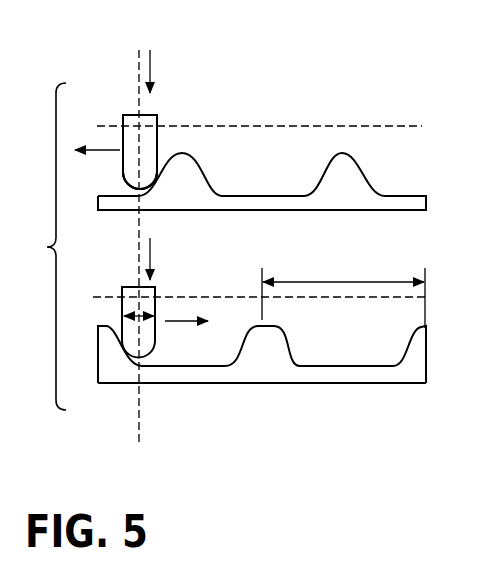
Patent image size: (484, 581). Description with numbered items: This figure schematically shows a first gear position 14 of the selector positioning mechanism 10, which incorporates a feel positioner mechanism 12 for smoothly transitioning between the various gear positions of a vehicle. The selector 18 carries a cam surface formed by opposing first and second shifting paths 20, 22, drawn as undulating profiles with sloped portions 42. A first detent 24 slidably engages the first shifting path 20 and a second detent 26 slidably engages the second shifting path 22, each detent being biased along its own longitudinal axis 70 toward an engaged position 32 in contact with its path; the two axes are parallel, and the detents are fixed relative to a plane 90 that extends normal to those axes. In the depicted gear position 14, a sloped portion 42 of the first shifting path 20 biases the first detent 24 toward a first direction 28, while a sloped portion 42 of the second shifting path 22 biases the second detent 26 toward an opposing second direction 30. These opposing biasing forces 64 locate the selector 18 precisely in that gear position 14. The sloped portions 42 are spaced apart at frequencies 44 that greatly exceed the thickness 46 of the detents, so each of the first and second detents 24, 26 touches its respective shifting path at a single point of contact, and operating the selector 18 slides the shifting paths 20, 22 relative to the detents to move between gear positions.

The selector positioning mechanism 10 is at (41, 246).
The feel positioner mechanism 12 is at (321, 151).
The gear position 14 is at (98, 45).
The selector 18 is at (325, 200).
The first shifting path 20 is at (423, 185).
The second shifting path 22 is at (348, 355).
The first detent 24 is at (148, 172).
The second detent 26 is at (118, 306).
The first direction 28 is at (106, 153).
The second direction 30 is at (174, 322).
The engaged position 32 is at (88, 112).
The sloped portion 42 is at (205, 158).
The frequency 44 is at (320, 282).
The thickness 46 is at (135, 312).
The opposing biasing forces 64 is at (107, 141).
The longitudinal axis 70 is at (139, 243).
The plane 90 is at (380, 126).